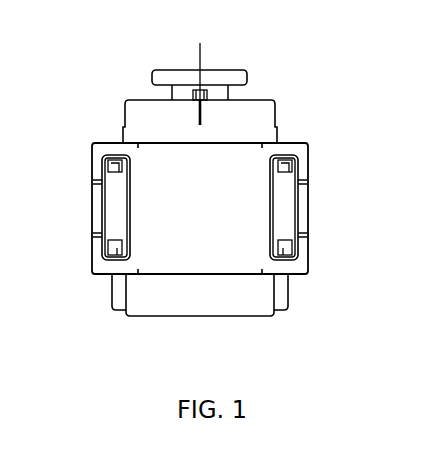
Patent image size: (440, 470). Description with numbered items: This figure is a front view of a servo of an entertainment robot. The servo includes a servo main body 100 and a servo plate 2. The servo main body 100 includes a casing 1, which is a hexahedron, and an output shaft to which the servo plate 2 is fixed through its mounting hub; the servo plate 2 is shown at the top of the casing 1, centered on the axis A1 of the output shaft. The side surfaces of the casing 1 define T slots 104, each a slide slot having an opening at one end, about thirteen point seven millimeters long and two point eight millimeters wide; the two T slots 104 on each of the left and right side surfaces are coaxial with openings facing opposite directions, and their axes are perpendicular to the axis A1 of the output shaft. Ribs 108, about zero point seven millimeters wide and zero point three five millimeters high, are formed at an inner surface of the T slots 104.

The servo main body 100 is at (203, 196).
The casing 1 is at (240, 297).
The servo plate 2 is at (177, 75).
The axis of the output shaft A1 is at (203, 53).
The T slot 104 is at (113, 223).
The rib 108 is at (121, 181).